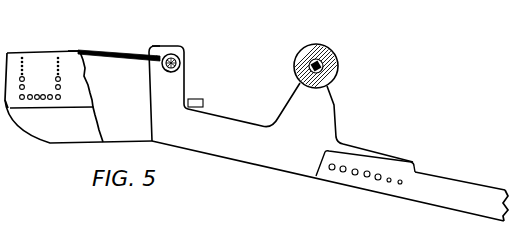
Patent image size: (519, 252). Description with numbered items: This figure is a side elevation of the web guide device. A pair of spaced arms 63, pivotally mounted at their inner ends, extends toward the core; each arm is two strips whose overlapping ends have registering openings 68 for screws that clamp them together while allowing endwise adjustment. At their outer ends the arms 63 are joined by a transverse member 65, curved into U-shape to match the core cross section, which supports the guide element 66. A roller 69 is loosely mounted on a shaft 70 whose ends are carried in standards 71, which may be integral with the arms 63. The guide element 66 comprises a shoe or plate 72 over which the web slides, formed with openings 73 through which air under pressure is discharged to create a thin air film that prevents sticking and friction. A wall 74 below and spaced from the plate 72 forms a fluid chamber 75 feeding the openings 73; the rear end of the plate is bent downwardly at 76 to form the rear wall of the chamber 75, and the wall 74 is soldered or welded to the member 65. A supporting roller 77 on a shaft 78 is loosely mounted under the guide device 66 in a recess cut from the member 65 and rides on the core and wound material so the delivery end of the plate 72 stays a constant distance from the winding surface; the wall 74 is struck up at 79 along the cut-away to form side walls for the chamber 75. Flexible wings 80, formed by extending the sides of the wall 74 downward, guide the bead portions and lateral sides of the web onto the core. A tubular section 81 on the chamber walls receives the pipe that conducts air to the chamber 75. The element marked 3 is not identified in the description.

The lever 3 is at (119, 42).
The spaced arms 63 is at (452, 198).
The transverse member 65 is at (176, 87).
The guide element 66 is at (70, 59).
The openings 68 is at (390, 182).
The roller 69 is at (318, 50).
The shaft 70 is at (322, 69).
The standards 71 is at (320, 115).
The shoe or plate 72 is at (37, 60).
The openings 73 is at (24, 92).
The wall 74 is at (123, 57).
The fluid chamber 75 is at (152, 55).
The downwardly bent rear end 76 is at (183, 53).
The supporting roller 77 is at (181, 64).
The shaft 78 is at (165, 72).
The struck-up metal 79 is at (160, 57).
The wings 80 is at (52, 132).
The tubular section 81 is at (204, 103).